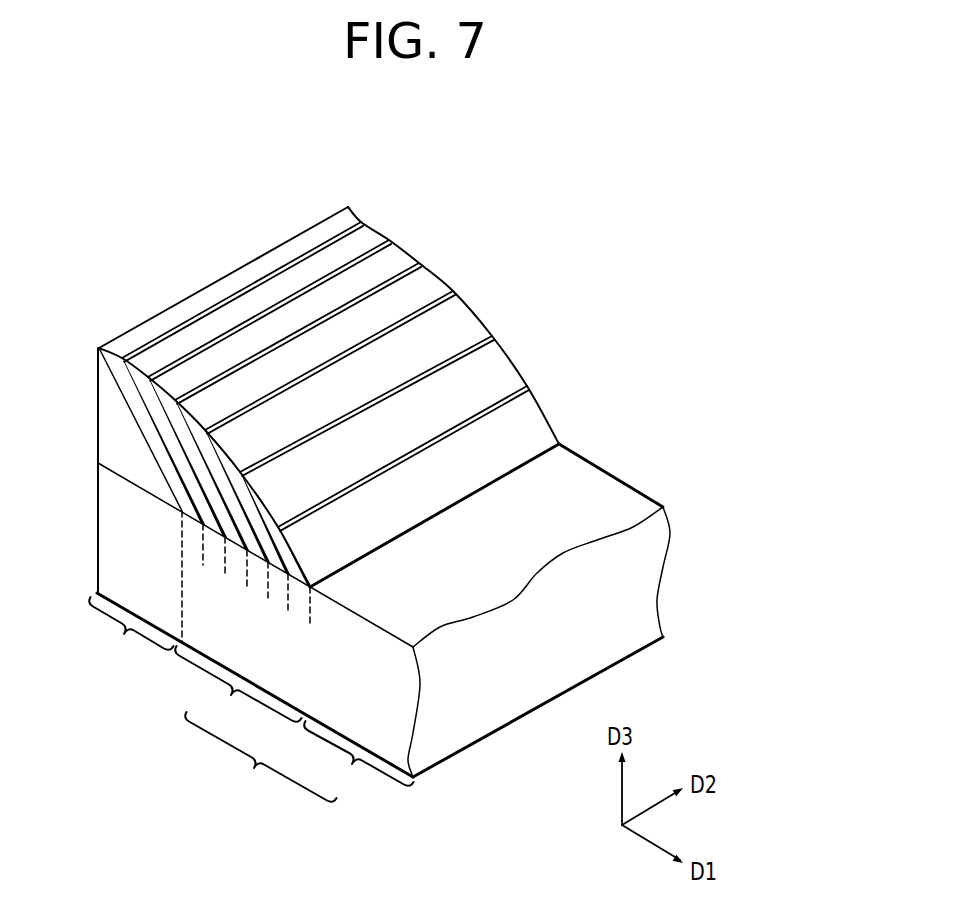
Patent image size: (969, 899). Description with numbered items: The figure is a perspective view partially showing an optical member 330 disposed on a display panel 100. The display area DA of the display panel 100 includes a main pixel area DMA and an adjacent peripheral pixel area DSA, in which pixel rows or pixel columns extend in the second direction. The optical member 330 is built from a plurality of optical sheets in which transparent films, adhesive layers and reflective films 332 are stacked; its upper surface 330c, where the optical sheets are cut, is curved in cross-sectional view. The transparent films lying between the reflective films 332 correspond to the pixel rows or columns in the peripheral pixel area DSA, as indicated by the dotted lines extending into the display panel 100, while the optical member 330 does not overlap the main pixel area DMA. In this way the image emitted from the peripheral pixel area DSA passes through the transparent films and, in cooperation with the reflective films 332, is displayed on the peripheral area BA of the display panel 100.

The display panel 100 is at (624, 453).
The optical member 330 is at (329, 394).
The upper surface 330c is at (394, 257).
The reflective films 332 is at (358, 218).
The peripheral area BA is at (131, 628).
The peripheral pixel area DSA is at (238, 685).
The main pixel area DMA is at (358, 757).
The display area DA is at (260, 757).